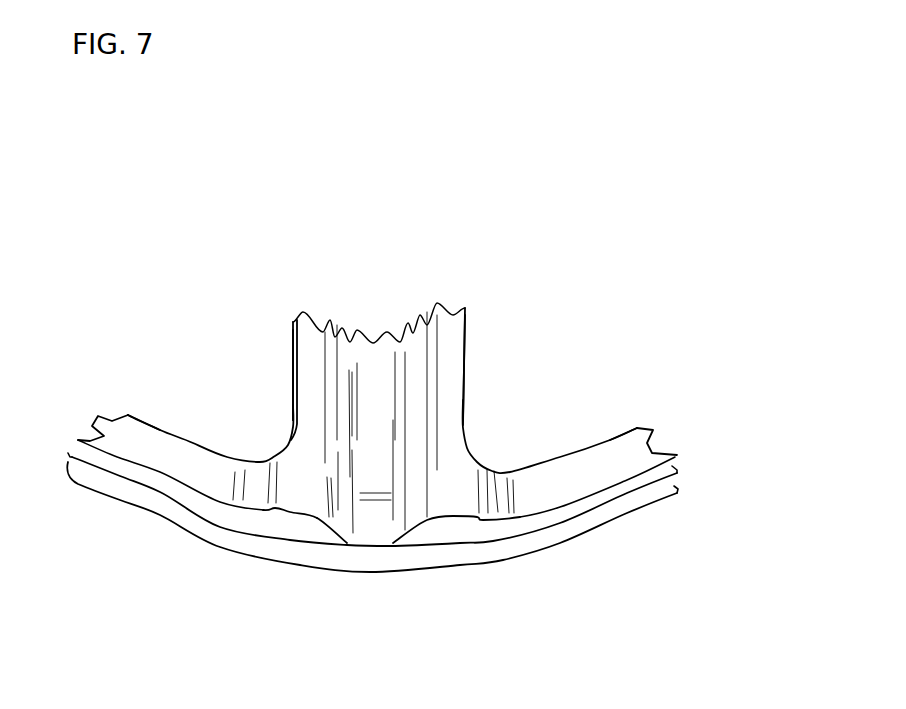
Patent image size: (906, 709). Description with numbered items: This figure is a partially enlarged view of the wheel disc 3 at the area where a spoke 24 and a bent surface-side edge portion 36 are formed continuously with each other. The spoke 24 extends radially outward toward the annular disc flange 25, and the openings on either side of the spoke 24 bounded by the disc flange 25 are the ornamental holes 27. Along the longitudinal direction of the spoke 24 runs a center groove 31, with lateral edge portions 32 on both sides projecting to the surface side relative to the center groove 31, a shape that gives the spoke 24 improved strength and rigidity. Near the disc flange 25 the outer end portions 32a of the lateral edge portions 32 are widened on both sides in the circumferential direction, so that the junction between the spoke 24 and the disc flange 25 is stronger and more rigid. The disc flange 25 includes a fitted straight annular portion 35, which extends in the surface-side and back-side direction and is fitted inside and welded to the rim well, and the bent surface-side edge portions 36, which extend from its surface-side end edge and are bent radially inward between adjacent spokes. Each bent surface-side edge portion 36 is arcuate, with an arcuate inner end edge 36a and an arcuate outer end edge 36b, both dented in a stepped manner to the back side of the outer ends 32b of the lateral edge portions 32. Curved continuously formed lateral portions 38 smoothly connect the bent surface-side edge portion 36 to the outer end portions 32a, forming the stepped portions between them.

The wheel disc 3 is at (668, 332).
The spoke 24 is at (380, 357).
The disc flange 25 is at (528, 527).
The ornamental hole 27 is at (238, 368).
The center groove 31 is at (368, 362).
The lateral edge portion 32 is at (450, 330).
The outer end portion of lateral edge portion 32a is at (308, 483).
The outer end of lateral edge portion 32b is at (292, 505).
The fitted straight annular portion 35 is at (548, 533).
The bent surface-side edge portion 36 is at (155, 460).
The arcuate inner end edge 36a is at (175, 437).
The arcuate outer end edge 36b is at (177, 488).
The continuously formed lateral portion 38 is at (493, 490).